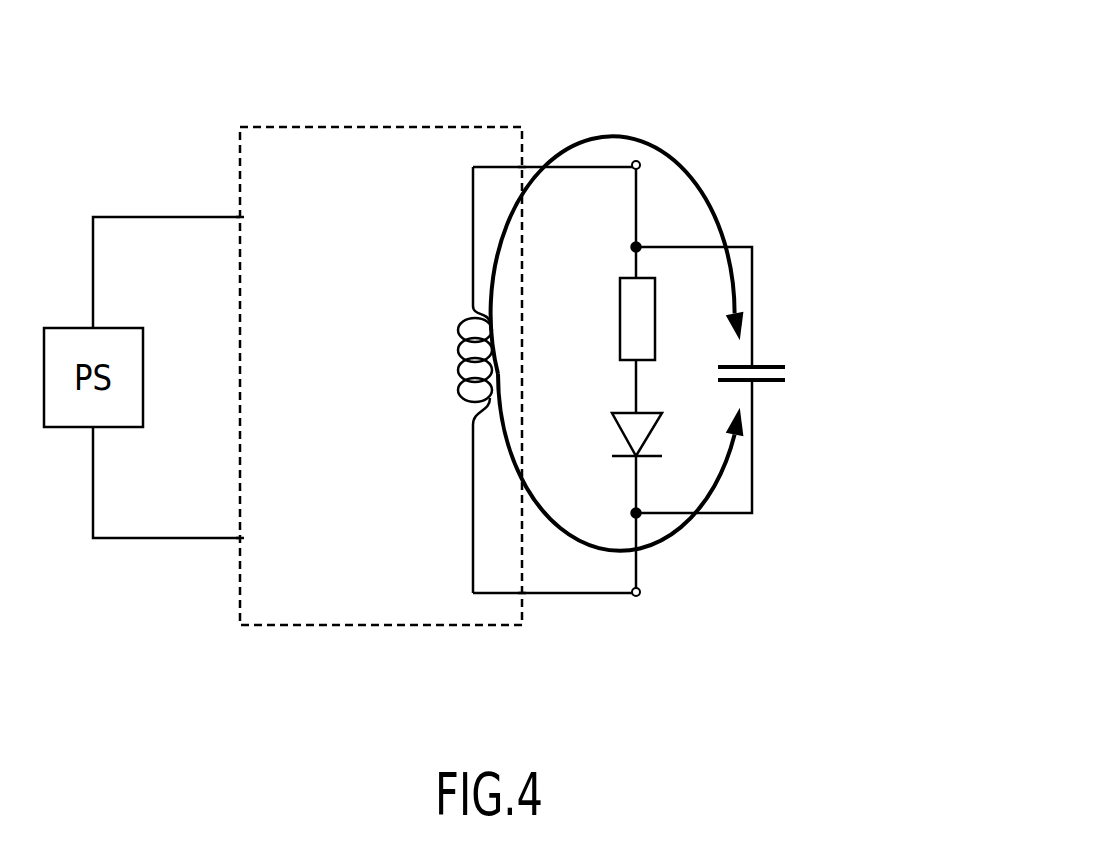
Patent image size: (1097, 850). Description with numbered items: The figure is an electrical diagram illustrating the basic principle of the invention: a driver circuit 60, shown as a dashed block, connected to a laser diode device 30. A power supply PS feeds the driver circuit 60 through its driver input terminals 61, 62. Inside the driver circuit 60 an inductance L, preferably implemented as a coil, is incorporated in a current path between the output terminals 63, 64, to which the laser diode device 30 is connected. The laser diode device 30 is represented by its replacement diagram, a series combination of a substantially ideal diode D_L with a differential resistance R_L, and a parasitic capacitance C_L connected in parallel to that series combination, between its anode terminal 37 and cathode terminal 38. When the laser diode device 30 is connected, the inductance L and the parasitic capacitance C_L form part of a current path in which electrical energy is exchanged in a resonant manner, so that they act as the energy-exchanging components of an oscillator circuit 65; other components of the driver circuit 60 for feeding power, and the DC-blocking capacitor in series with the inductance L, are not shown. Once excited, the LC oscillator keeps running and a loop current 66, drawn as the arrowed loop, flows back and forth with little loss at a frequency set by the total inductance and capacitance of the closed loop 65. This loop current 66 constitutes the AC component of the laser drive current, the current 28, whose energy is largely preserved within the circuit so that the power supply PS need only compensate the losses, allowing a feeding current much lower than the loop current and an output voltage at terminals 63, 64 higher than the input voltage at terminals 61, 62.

The driver circuit 60 is at (345, 125).
The driver input terminal 61 is at (255, 218).
The driver input terminal 62 is at (256, 537).
The output terminal 63 is at (522, 167).
The output terminal 64 is at (522, 595).
The oscillator circuit 65 is at (686, 81).
The laser diode device 30 is at (883, 218).
The anode terminal 37 is at (653, 158).
The cathode terminal 38 is at (655, 598).
The loop current 66 is at (683, 222).
The current 28 is at (686, 524).